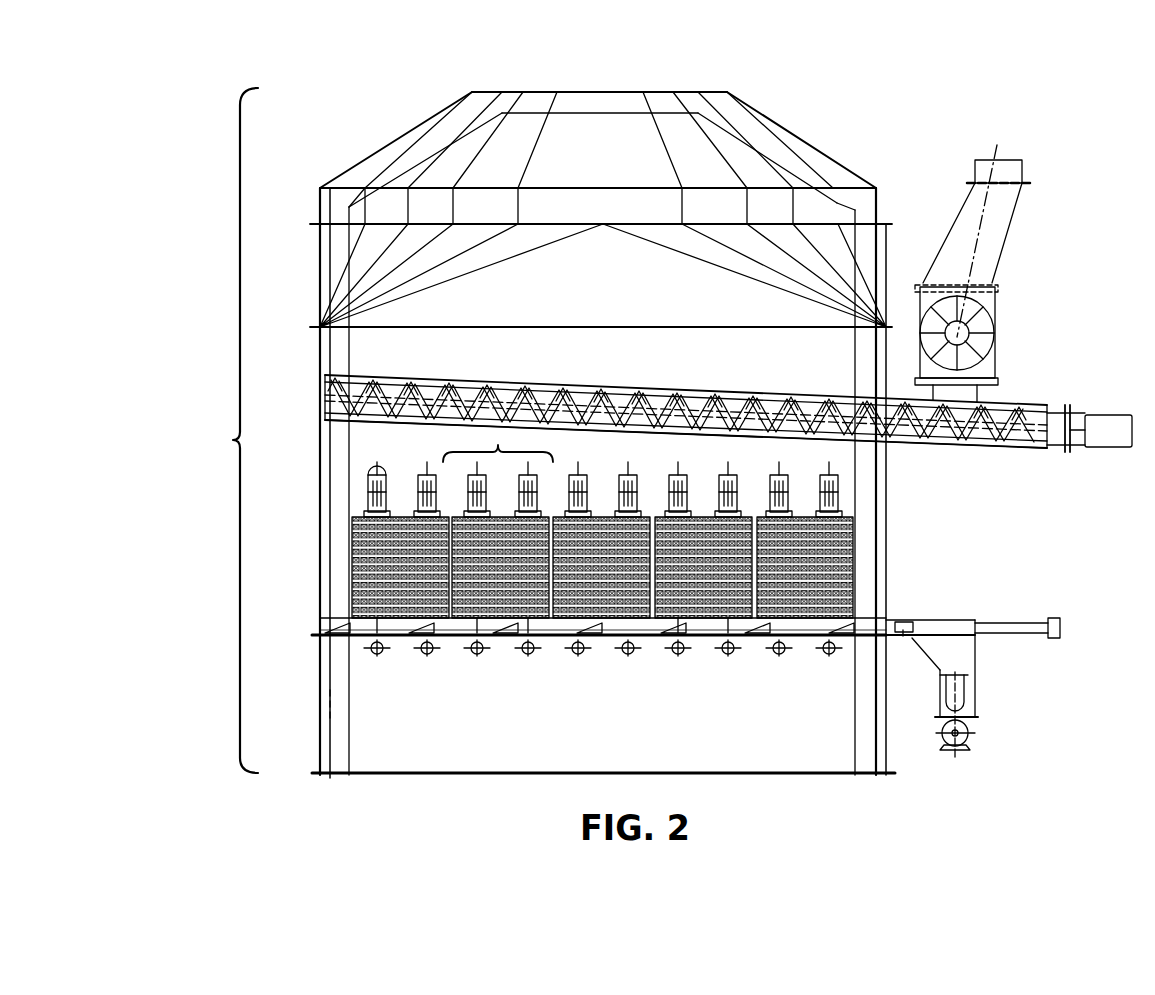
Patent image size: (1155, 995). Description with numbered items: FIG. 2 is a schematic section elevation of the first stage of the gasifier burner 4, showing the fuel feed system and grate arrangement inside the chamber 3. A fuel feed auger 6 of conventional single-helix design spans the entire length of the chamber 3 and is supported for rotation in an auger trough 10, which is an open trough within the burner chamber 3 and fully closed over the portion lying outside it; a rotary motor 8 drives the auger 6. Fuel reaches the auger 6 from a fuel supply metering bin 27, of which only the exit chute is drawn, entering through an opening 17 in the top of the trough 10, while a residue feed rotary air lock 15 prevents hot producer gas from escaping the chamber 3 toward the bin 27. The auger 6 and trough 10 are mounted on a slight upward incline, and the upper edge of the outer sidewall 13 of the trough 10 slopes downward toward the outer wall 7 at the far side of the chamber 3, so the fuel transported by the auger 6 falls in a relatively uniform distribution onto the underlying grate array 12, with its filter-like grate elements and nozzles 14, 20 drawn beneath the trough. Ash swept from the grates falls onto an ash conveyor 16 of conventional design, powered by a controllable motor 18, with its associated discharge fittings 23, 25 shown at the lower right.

The chamber 3 is at (672, 348).
The dust collecting apparatus 4 is at (551, 431).
The fuel feed auger 6 is at (995, 437).
The outer wall 7 is at (312, 492).
The rotary motor 8 is at (1117, 447).
The auger trough 10 is at (925, 447).
The grate array 12 is at (855, 564).
The outer sidewall 13 is at (785, 397).
The filter nozzle 14 is at (838, 500).
The residue feed rotary air lock 15 is at (995, 312).
The ash conveyor 16 is at (902, 635).
The opening 17 is at (965, 393).
The controllable motor 18 is at (1062, 630).
The spray nozzle 20 is at (830, 655).
The pump 23 is at (963, 690).
The pump motor 25 is at (968, 745).
The fuel supply metering bin 27 is at (1022, 160).